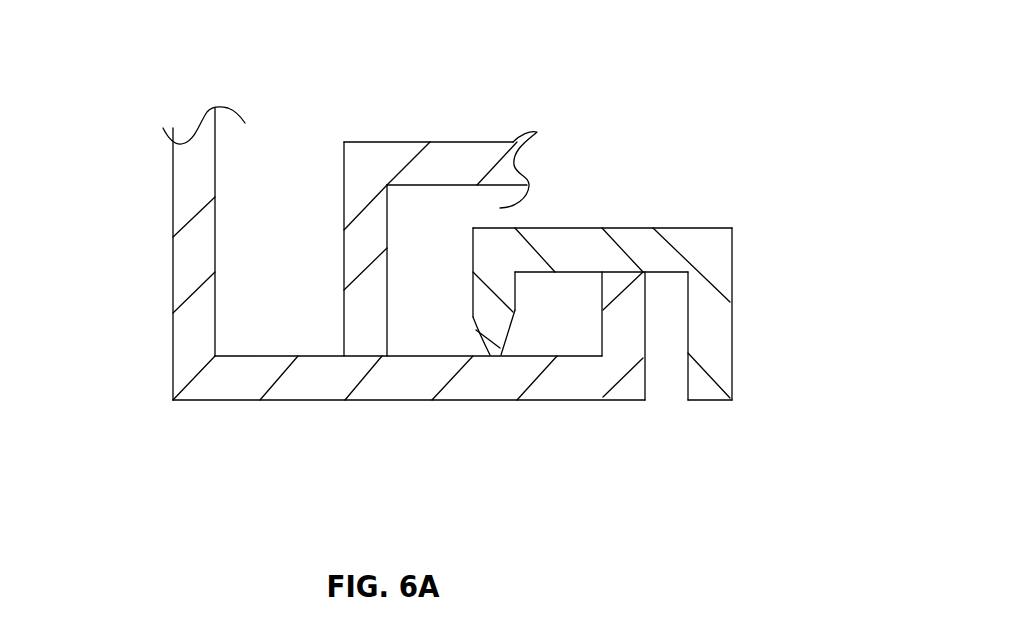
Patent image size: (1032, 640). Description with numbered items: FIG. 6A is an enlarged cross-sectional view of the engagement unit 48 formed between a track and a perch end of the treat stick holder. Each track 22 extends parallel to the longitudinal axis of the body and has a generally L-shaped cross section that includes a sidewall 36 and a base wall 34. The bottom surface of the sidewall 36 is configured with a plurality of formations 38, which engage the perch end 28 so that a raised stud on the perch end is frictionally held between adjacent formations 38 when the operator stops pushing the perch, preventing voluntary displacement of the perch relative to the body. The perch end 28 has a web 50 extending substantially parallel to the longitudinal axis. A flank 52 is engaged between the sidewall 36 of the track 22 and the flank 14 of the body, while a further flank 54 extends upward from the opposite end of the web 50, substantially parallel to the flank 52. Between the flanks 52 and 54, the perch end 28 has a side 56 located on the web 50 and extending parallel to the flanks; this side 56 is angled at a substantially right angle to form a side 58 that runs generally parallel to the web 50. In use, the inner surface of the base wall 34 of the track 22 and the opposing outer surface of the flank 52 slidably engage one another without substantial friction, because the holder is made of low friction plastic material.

The flank 14 is at (720, 345).
The track 22 is at (703, 220).
The perch end 28 is at (275, 188).
The base wall 34 is at (605, 245).
The sidewall 36 is at (488, 298).
The formations 38 is at (487, 340).
The engagement unit 48 is at (175, 475).
The web 50 is at (418, 380).
The flank 52 is at (623, 318).
The flank 54 is at (197, 255).
The side 56 is at (370, 242).
The side 58 is at (432, 167).